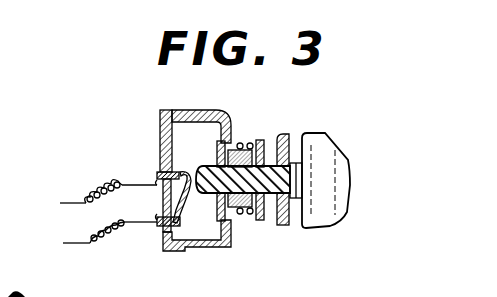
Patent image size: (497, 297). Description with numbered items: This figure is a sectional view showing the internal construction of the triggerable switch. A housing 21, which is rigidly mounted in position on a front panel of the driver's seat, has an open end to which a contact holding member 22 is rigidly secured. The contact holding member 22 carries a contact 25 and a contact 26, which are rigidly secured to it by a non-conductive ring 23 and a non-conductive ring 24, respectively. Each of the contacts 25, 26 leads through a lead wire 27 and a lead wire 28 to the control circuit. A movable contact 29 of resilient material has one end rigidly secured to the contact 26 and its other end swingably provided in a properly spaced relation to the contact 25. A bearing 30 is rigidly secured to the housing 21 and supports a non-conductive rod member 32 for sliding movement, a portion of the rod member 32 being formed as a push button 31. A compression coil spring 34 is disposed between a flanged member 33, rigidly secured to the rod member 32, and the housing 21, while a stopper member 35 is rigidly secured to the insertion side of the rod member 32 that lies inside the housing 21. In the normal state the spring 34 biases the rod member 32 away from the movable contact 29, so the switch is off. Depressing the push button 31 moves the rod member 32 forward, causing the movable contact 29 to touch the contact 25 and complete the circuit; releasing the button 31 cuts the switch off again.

The housing 21 is at (196, 110).
The contact holding member 22 is at (160, 130).
The non-conductive ring 23 is at (157, 174).
The non-conductive ring 24 is at (158, 226).
The contact 25 is at (168, 180).
The contact 26 is at (182, 250).
The lead wire 27 is at (86, 200).
The lead wire 28 is at (90, 244).
The movable contact 29 is at (185, 200).
The bearing 30 is at (261, 140).
The push button 31 is at (350, 183).
The rod member 32 is at (256, 214).
The flanged member 33 is at (284, 135).
The compression coil spring 34 is at (242, 143).
The stopper member 35 is at (219, 141).